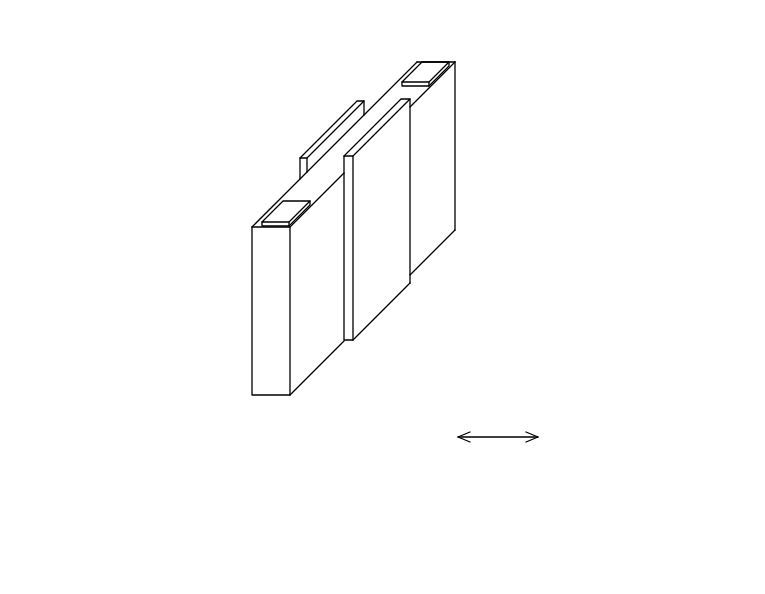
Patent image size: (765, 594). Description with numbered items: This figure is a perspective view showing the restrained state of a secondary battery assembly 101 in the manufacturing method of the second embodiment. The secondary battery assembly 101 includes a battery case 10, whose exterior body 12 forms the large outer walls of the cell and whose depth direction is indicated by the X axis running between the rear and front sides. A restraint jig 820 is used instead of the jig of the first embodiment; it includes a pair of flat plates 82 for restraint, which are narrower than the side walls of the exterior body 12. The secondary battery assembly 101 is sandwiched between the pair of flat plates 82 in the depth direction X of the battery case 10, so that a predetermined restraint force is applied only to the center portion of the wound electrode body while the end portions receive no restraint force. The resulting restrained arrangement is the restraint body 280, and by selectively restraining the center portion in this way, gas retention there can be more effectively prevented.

The restraint body 280 is at (165, 62).
The secondary battery assembly 101 is at (462, 77).
The battery case 10 is at (215, 311).
The exterior body 12 is at (260, 297).
The flat plate for restraint 82 is at (360, 140).
The restraint jig 820 is at (312, 147).